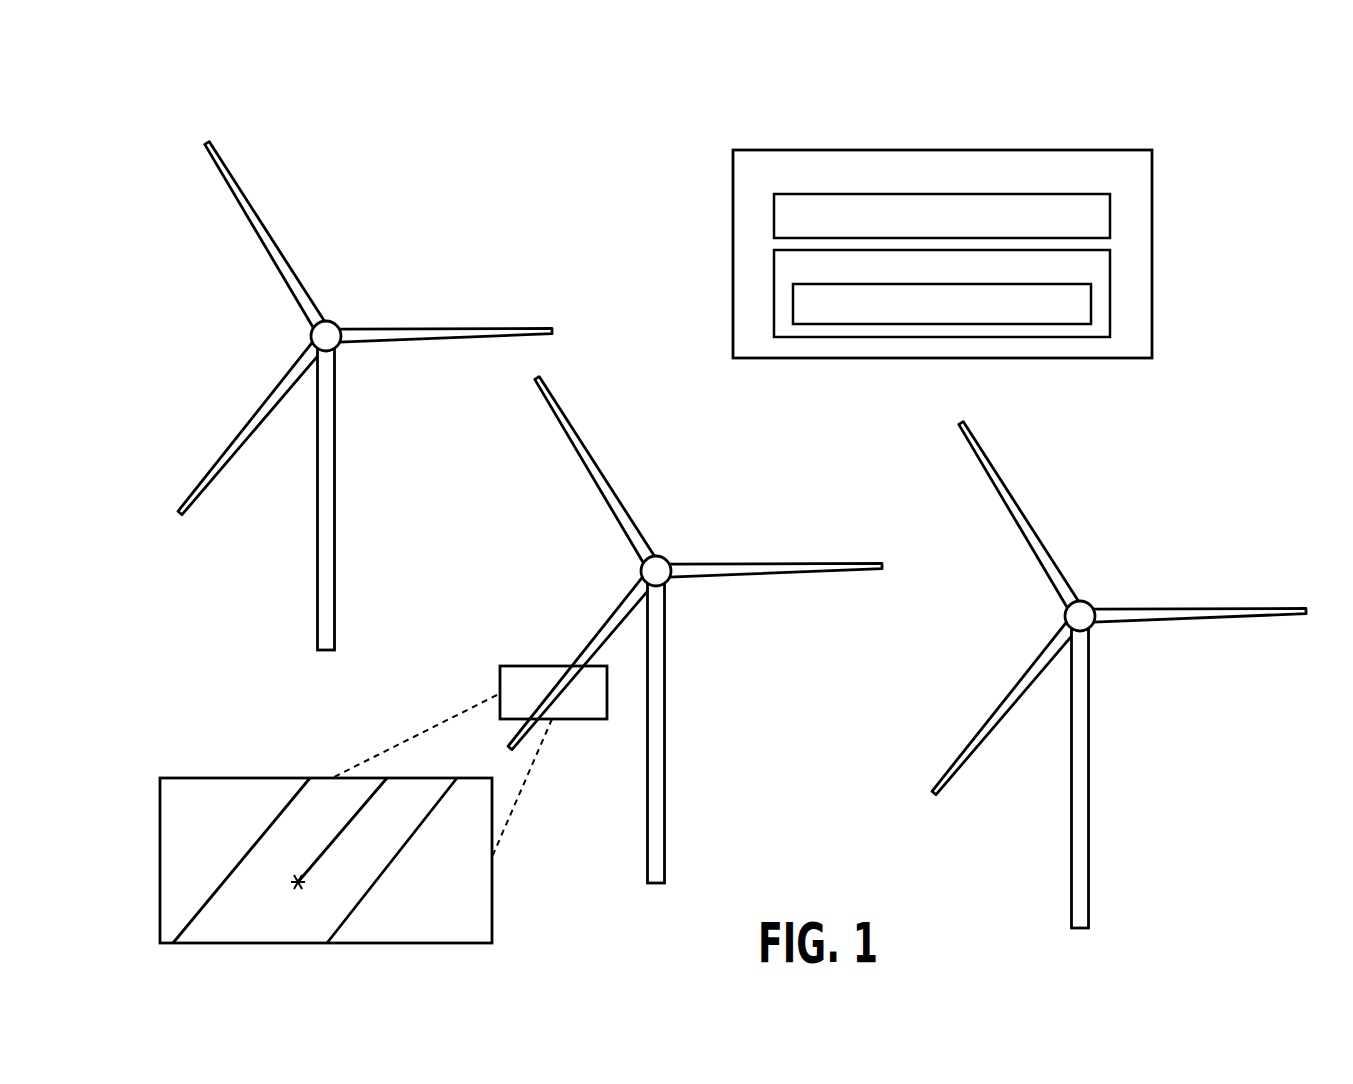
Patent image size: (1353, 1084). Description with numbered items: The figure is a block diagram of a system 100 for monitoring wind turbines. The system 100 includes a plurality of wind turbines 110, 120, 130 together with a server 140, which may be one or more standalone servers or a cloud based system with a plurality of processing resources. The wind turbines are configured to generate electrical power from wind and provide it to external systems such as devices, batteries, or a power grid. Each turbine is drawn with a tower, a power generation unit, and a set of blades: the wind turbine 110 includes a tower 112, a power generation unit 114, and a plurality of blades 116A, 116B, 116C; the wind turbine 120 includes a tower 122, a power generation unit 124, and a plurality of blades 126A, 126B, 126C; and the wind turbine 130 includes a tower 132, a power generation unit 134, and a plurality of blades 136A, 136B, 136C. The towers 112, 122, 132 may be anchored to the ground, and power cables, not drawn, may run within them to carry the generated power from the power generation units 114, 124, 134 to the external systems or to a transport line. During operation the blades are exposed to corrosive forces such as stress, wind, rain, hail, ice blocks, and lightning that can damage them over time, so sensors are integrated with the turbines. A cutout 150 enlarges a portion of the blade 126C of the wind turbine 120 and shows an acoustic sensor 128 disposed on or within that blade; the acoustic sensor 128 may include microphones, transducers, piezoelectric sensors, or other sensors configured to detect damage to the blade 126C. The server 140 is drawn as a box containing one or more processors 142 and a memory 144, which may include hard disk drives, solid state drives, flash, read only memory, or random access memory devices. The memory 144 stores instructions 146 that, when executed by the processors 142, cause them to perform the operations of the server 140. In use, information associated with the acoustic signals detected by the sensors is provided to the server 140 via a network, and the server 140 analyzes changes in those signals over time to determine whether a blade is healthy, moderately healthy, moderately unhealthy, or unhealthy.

The system 100 is at (265, 56).
The wind turbine 110 is at (359, 396).
The tower 112 is at (375, 493).
The power generation unit 114 is at (270, 326).
The blade 116A is at (445, 312).
The blade 116B is at (308, 235).
The blade 116C is at (245, 420).
The wind turbine 120 is at (689, 630).
The tower 122 is at (705, 727).
The power generation unit 124 is at (600, 561).
The blade 126A is at (775, 547).
The blade 126B is at (638, 470).
The blade 126C is at (575, 655).
The acoustic sensor 128 is at (298, 882).
The wind turbine 130 is at (1113, 675).
The tower 132 is at (1129, 772).
The power generation unit 134 is at (1024, 606).
The blade 136A is at (1199, 592).
The blade 136B is at (1062, 515).
The blade 136C is at (999, 700).
The server 140 is at (961, 233).
The processors 142 is at (1110, 216).
The memory 144 is at (1110, 293).
The instructions 146 is at (793, 300).
The cutout 150 is at (326, 839).